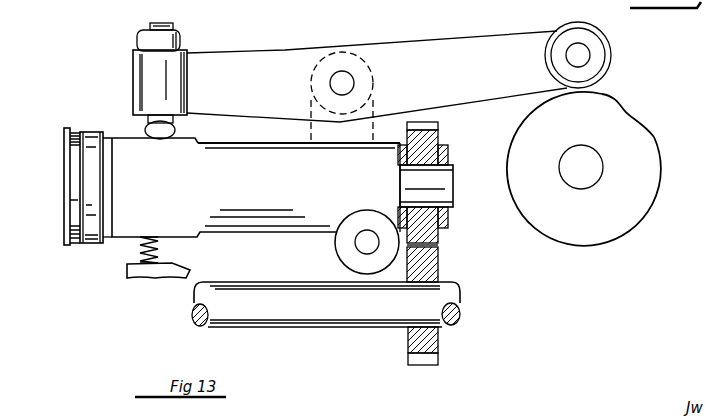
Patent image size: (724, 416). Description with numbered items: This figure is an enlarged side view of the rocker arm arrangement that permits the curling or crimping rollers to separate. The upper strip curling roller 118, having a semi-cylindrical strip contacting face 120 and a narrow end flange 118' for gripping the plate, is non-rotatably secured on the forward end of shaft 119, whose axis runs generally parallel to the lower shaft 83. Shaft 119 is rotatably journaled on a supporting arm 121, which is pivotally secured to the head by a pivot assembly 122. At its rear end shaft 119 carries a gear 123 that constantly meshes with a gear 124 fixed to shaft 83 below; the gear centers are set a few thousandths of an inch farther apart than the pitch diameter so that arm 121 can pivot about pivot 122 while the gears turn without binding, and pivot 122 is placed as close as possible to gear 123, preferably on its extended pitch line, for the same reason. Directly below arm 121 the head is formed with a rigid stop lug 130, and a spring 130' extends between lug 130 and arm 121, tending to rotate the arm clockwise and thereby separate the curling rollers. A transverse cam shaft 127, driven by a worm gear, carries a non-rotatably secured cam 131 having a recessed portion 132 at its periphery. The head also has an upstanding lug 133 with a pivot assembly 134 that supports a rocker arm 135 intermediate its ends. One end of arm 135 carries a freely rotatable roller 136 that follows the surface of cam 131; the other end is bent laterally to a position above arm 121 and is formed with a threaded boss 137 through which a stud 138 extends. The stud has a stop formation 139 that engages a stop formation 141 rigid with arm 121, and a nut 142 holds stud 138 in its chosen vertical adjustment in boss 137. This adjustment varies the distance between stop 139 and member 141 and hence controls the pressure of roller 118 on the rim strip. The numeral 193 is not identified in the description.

The shaft 83 is at (450, 300).
The upper strip curling roller 118 is at (101, 168).
The end flange 118' is at (46, 186).
The shaft 119 is at (450, 178).
The strip contacting face 120 is at (72, 131).
The supporting arm 121 is at (255, 229).
The pivot assembly 122 is at (357, 243).
The gear 123 is at (439, 133).
The gear 124 is at (438, 254).
The transverse cam shaft 127 is at (586, 181).
The rigid stop lug 130 is at (174, 261).
The spring 130' is at (130, 250).
The cam 131 is at (659, 160).
The recessed portion 132 is at (625, 115).
The upstanding lug 133 is at (369, 143).
The pivot assembly 134 is at (342, 78).
The rocker arm 135 is at (440, 43).
The roller 136 is at (585, 24).
The threaded boss 137 is at (142, 63).
The stud 138 is at (161, 24).
The stop formation 139 is at (149, 128).
The stop formation 141 is at (190, 140).
The nut 142 is at (182, 42).
The member 193 is at (359, 6).